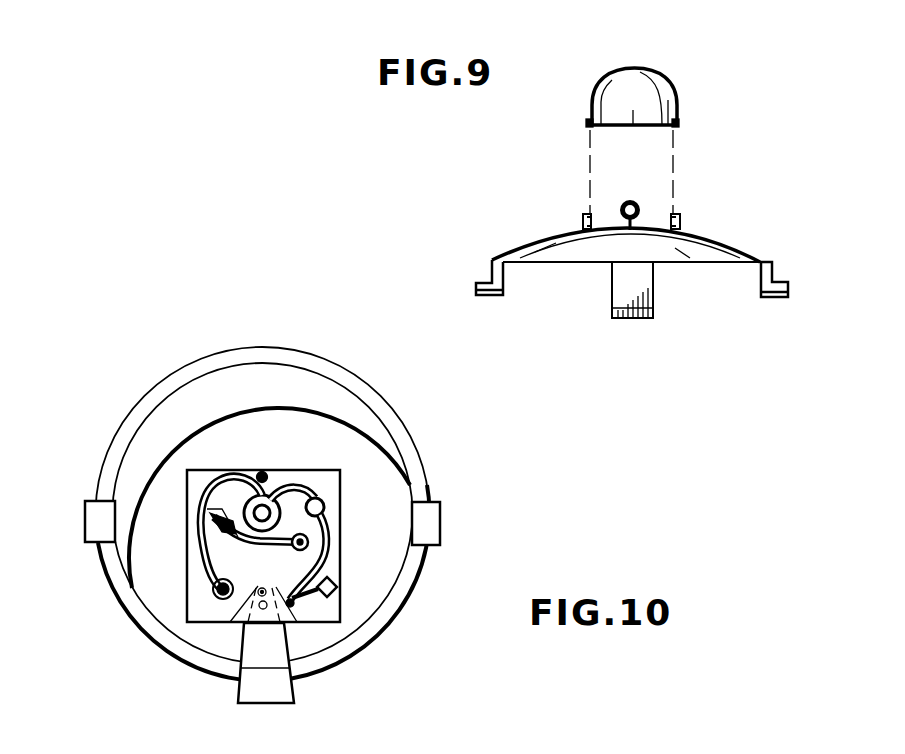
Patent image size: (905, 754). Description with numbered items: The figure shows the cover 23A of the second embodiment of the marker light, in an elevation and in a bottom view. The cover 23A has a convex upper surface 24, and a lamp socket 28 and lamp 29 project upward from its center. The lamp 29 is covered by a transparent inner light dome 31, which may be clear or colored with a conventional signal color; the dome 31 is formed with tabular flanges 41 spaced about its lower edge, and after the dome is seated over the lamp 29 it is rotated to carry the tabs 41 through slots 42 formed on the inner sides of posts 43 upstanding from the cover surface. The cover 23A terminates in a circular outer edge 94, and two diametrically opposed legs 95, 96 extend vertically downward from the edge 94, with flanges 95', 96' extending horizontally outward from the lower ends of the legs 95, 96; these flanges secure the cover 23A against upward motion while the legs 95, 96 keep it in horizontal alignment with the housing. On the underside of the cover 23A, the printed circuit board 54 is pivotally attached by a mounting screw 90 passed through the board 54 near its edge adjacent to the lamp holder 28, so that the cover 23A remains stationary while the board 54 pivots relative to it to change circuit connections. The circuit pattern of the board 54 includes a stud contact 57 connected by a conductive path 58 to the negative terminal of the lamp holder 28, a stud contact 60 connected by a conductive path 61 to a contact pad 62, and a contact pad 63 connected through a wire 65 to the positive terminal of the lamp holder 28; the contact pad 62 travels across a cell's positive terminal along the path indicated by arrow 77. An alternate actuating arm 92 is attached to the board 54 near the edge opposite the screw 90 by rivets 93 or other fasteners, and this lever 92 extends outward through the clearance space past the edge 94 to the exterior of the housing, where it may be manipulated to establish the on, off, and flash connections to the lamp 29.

In FIG. 9, the cover 23A is at (515, 240).
In FIG. 10, the cover 23A is at (296, 346).
In FIG. 9, the convex upper surface 24 is at (507, 256).
In FIG. 9, the lamp socket 28 is at (647, 224).
In FIG. 10, the lamp socket 28 is at (282, 517).
In FIG. 9, the lamp 29 is at (620, 203).
In FIG. 9, the inner light dome 31 is at (642, 70).
In FIG. 9, the tabular flanges 41 is at (589, 122).
In FIG. 9, the slots 42 is at (587, 213).
In FIG. 9, the posts 43 is at (583, 216).
In FIG. 10, the printed circuit board 54 is at (354, 492).
In FIG. 10, the stud contact 57 is at (160, 634).
In FIG. 10, the conductive path 58 is at (236, 475).
In FIG. 10, the stud contact 60 is at (327, 545).
In FIG. 10, the conductive path 61 is at (252, 556).
In FIG. 10, the contact pad 62 is at (212, 516).
In FIG. 10, the contact pad 63 is at (337, 663).
In FIG. 10, the wire 65 is at (322, 500).
In FIG. 10, the arrow 77 is at (216, 590).
In FIG. 10, the mounting screw 90 is at (264, 473).
In FIG. 9, the alternate actuating arm 92 is at (655, 312).
In FIG. 10, the alternate actuating arm 92 is at (292, 704).
In FIG. 10, the rivets 93 is at (233, 672).
In FIG. 9, the circular outer edge 94 is at (562, 264).
In FIG. 10, the circular outer edge 94 is at (178, 372).
In FIG. 9, the leg 95 is at (445, 273).
In FIG. 10, the leg 95 is at (469, 523).
In FIG. 9, the flange 95' is at (457, 312).
In FIG. 9, the leg 96 is at (792, 255).
In FIG. 10, the leg 96 is at (60, 521).
In FIG. 9, the flange 96' is at (780, 326).